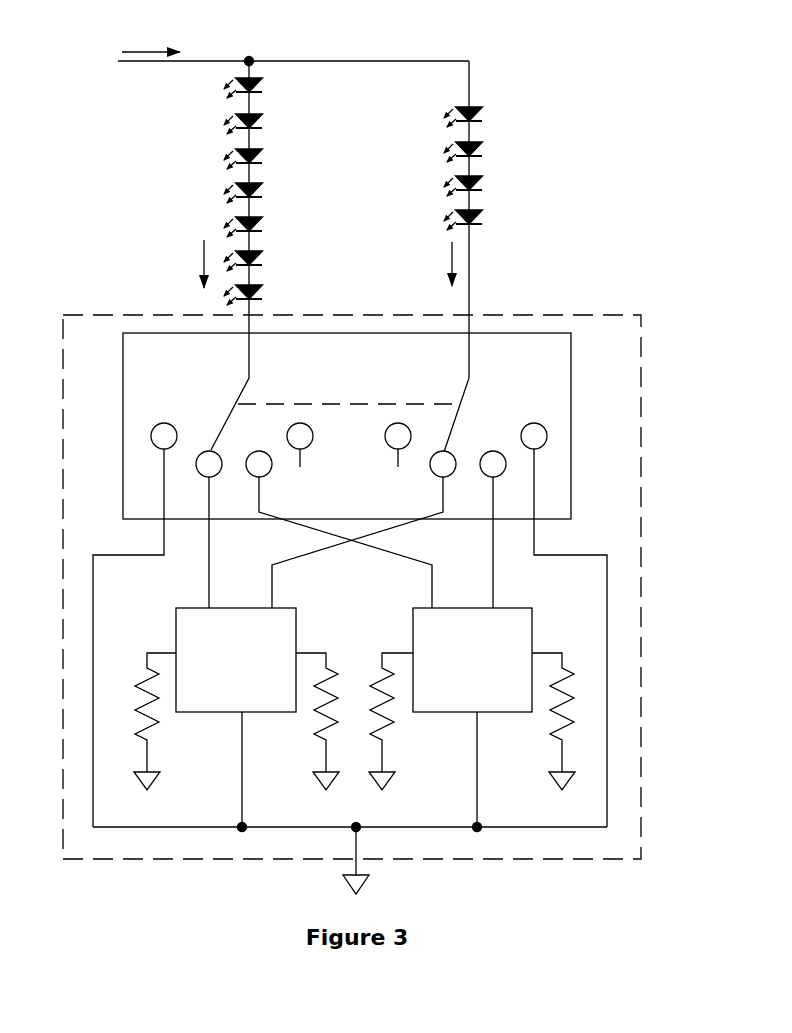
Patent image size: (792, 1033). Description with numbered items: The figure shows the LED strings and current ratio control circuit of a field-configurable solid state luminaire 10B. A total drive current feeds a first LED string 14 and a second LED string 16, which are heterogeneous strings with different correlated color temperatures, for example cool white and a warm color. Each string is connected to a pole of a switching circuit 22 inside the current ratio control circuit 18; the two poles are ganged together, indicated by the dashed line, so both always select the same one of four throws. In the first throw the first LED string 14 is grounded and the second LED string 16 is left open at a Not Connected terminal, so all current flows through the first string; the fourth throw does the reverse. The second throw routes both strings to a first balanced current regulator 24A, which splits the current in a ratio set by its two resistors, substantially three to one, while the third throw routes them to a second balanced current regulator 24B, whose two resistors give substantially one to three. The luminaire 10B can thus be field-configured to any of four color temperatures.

The field-configurable solid state luminaire 10B is at (406, 464).
The first LED string 14 is at (284, 172).
The second LED string 16 is at (517, 166).
The current ratio control circuit 18 is at (617, 314).
The switching circuit 22 is at (571, 395).
The first balanced current regulator 24A is at (296, 620).
The second balanced current regulator 24B is at (532, 620).